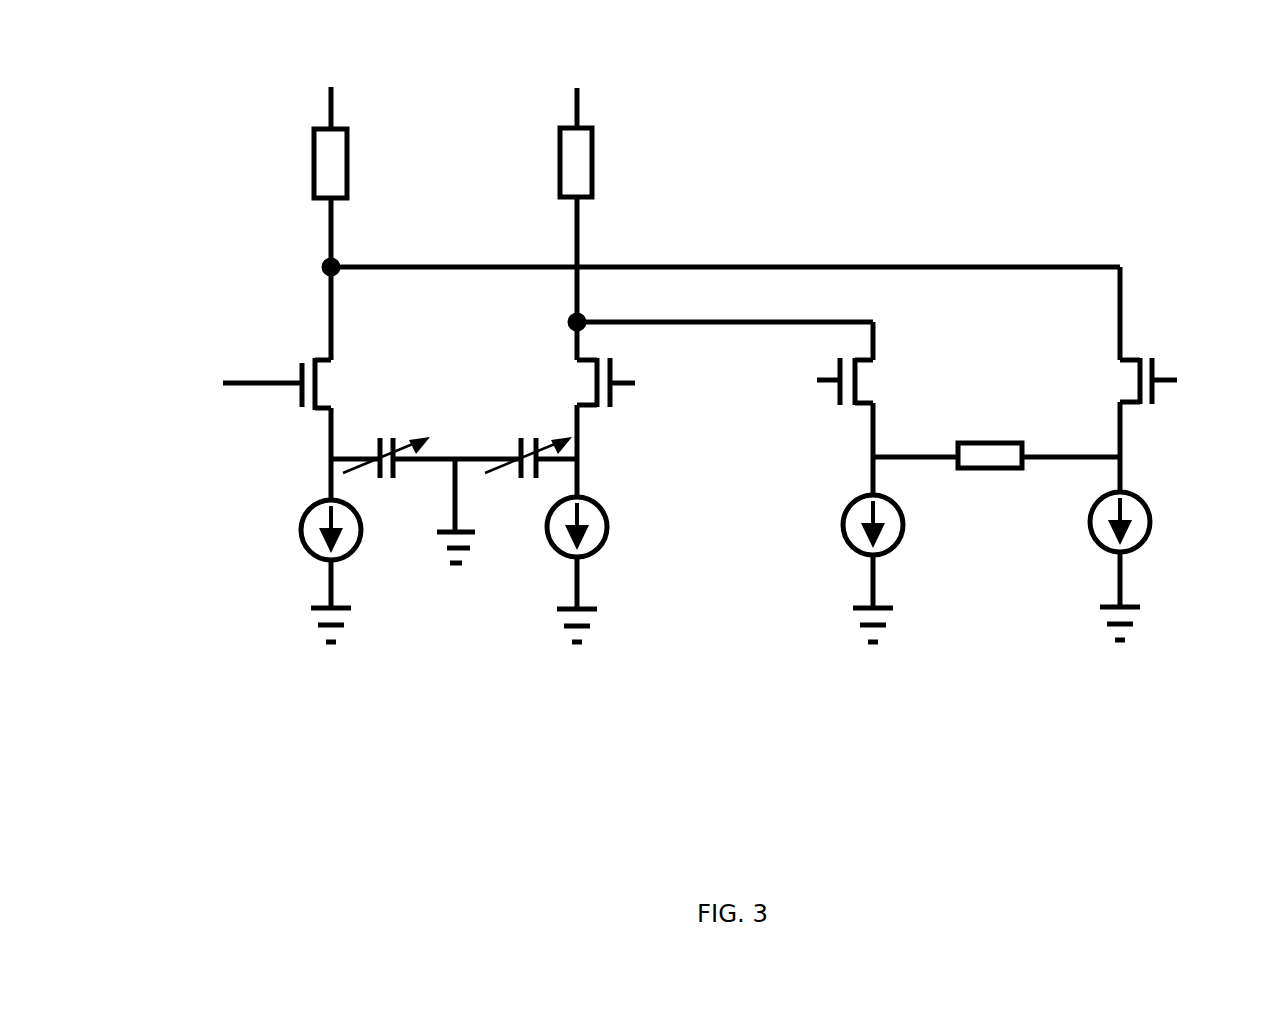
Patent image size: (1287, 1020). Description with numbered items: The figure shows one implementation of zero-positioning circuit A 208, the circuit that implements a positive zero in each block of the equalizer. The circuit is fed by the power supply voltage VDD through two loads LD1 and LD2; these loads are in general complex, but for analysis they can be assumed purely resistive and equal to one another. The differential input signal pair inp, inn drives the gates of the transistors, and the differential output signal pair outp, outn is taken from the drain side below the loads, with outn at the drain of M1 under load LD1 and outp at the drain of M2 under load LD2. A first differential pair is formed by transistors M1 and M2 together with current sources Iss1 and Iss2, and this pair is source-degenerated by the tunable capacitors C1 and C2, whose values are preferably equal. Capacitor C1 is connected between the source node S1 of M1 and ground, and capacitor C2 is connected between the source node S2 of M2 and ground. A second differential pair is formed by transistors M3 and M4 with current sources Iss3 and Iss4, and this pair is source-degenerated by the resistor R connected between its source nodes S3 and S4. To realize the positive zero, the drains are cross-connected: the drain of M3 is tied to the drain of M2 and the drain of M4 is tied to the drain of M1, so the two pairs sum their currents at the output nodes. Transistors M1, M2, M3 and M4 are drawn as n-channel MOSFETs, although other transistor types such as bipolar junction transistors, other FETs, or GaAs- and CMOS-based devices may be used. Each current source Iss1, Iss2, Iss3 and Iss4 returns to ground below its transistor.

The ZP circuit A 208 is at (1083, 57).
The power supply voltage VDD is at (452, 95).
The load LD1 is at (283, 198).
The load LD2 is at (624, 225).
The negative output signal outn is at (722, 291).
The positive output signal outp is at (721, 320).
The positive input signal inp is at (492, 376).
The negative input signal inn is at (932, 377).
The transistor M1 is at (330, 408).
The transistor M2 is at (582, 408).
The transistor M3 is at (867, 407).
The transistor M4 is at (1123, 407).
The node S1 is at (340, 471).
The node S2 is at (597, 469).
The node S3 is at (895, 468).
The node S4 is at (1091, 465).
The tunable capacitor C1 is at (399, 439).
The tunable capacitor C2 is at (516, 439).
The resistor R is at (990, 437).
The current source Iss1 is at (300, 571).
The current source Iss2 is at (608, 569).
The current source Iss3 is at (845, 568).
The current source Iss4 is at (1147, 566).